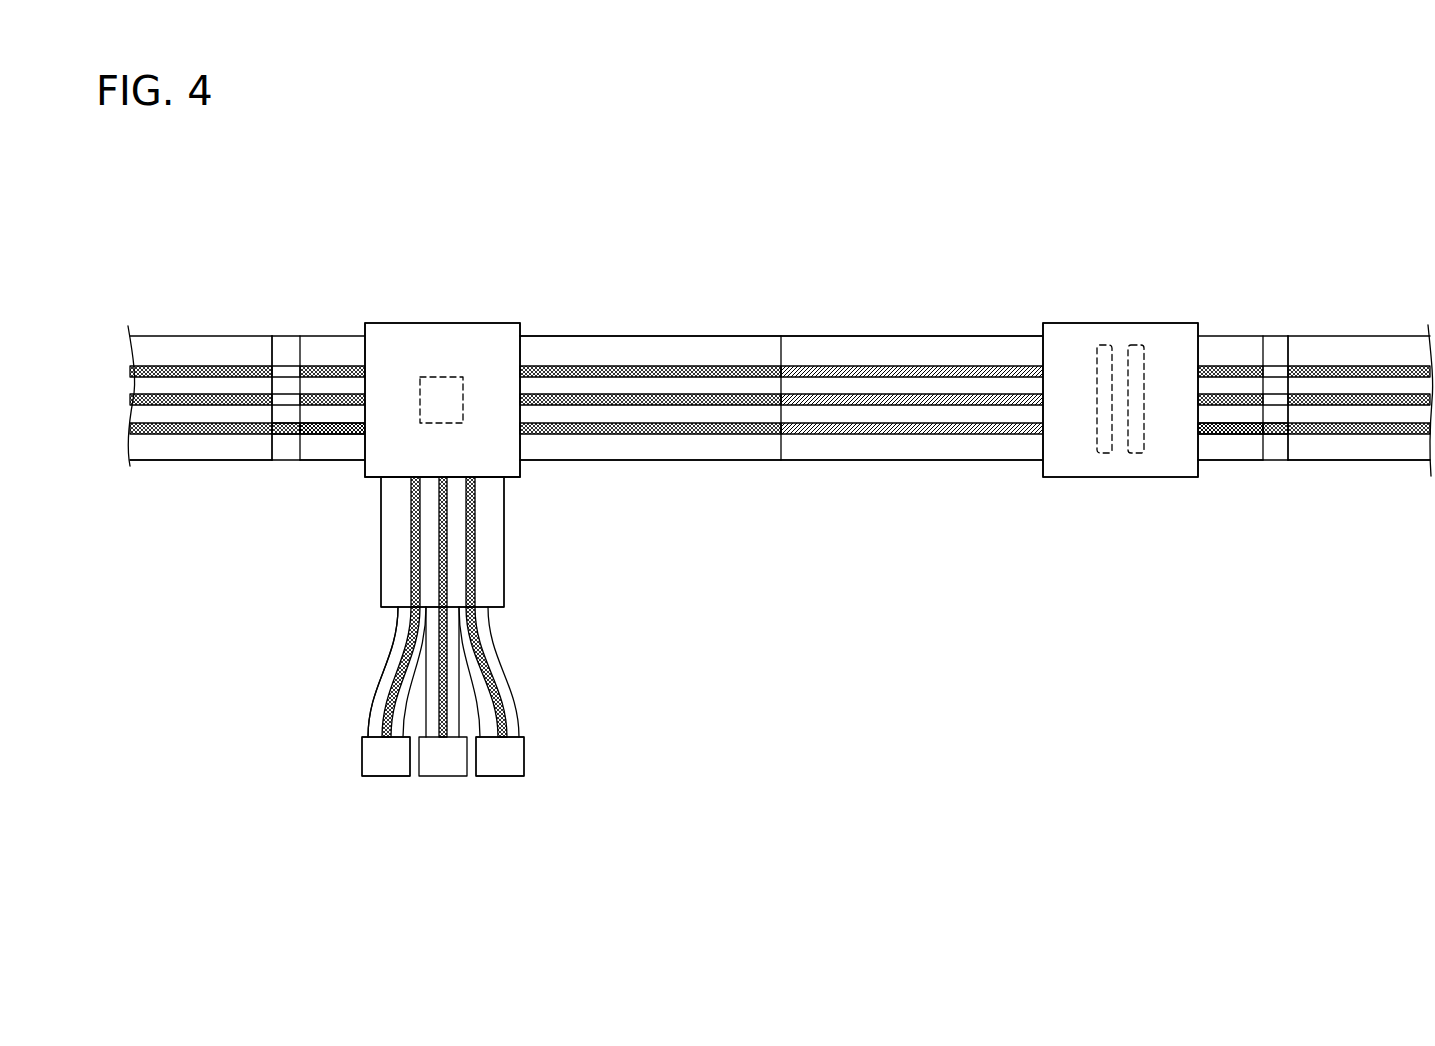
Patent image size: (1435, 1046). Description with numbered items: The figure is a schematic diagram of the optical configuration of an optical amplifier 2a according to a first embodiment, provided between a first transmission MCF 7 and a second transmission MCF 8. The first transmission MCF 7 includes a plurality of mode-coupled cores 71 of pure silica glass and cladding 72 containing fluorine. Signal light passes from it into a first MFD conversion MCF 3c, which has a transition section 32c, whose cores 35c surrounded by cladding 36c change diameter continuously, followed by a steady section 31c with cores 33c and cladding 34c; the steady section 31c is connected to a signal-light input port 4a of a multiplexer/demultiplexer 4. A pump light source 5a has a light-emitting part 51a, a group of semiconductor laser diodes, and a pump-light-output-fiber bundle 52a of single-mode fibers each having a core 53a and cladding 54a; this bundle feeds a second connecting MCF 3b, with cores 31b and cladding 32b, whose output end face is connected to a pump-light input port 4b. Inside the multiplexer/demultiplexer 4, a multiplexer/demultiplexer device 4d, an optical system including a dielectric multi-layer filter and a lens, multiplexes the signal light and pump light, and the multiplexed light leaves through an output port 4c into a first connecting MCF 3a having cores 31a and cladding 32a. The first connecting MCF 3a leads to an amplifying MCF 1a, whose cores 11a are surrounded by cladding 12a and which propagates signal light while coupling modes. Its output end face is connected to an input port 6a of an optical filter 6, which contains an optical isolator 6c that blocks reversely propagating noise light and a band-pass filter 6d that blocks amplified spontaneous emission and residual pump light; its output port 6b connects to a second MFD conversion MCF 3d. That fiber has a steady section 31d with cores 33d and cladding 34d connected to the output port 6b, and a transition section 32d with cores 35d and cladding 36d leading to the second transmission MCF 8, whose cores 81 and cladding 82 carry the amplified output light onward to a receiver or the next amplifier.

The first transmission MCF 7 is at (272, 309).
The cores 71 is at (212, 436).
The cladding 72 is at (166, 462).
The first MFD conversion MCF 3c is at (365, 273).
The transition section 32c is at (300, 309).
The steady section 31c is at (300, 309).
The cores 33c is at (350, 437).
The cladding 34c is at (325, 462).
The cores 35c is at (291, 437).
The cladding 36c is at (276, 462).
The multiplexer/demultiplexer 4 is at (483, 323).
The signal-light input port 4a is at (366, 415).
The pump-light input port 4b is at (458, 477).
The output port 4c is at (520, 381).
The multiplexer/demultiplexer device 4d is at (432, 377).
The first connecting MCF 3a is at (781, 309).
The cores 31a is at (597, 435).
The cladding 32a is at (683, 462).
The amplifying MCF 1a is at (781, 309).
The cores 11a is at (808, 435).
The cladding 12a is at (898, 462).
The optical filter 6 is at (1160, 323).
The input port 6a is at (1043, 430).
The output port 6b is at (1198, 430).
The optical isolator 6c is at (1100, 345).
The band-pass filter 6d is at (1136, 345).
The second MFD conversion MCF 3d is at (1198, 273).
The steady section 31d is at (1263, 309).
The transition section 32d is at (1263, 309).
The cores 33d is at (1210, 437).
The cladding 34d is at (1237, 462).
The cores 35d is at (1272, 437).
The cladding 36d is at (1284, 462).
The second transmission MCF 8 is at (1288, 309).
The cores 81 is at (1360, 437).
The cladding 82 is at (1409, 462).
The second connecting MCF 3b is at (531, 477).
The cores 31b is at (411, 602).
The cladding 32b is at (381, 568).
The pump light source 5a is at (596, 653).
The pump-light-output-fiber bundle 52a is at (531, 607).
The core 53a is at (396, 672).
The cladding 54a is at (368, 716).
The light-emitting part 51a is at (531, 737).
The optical amplifier 2a is at (1318, 805).